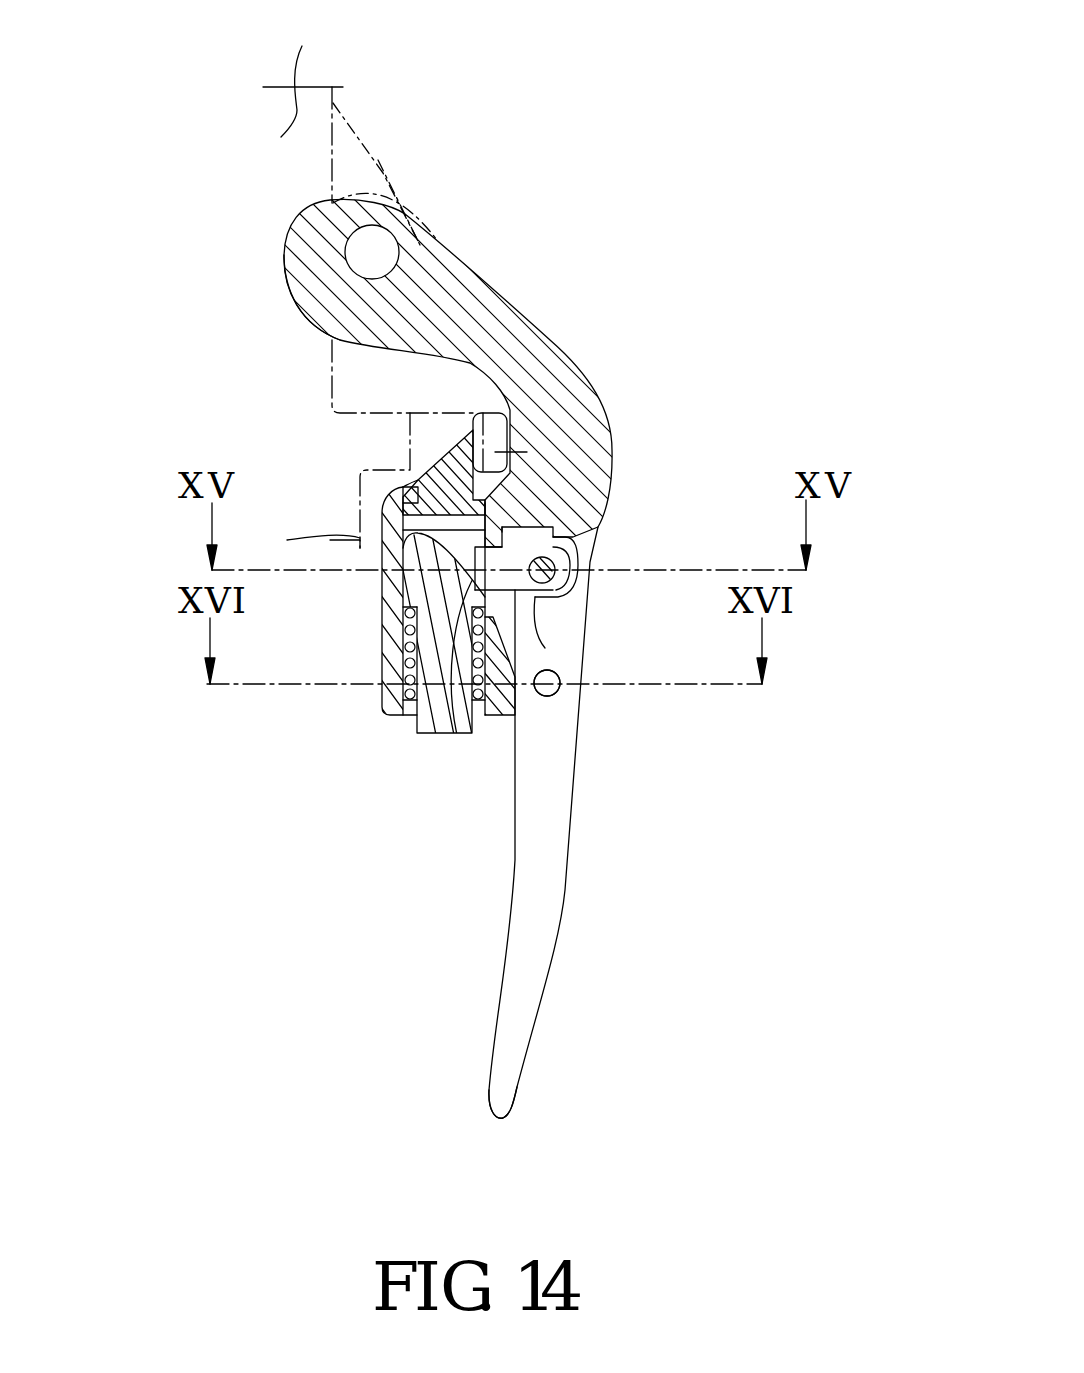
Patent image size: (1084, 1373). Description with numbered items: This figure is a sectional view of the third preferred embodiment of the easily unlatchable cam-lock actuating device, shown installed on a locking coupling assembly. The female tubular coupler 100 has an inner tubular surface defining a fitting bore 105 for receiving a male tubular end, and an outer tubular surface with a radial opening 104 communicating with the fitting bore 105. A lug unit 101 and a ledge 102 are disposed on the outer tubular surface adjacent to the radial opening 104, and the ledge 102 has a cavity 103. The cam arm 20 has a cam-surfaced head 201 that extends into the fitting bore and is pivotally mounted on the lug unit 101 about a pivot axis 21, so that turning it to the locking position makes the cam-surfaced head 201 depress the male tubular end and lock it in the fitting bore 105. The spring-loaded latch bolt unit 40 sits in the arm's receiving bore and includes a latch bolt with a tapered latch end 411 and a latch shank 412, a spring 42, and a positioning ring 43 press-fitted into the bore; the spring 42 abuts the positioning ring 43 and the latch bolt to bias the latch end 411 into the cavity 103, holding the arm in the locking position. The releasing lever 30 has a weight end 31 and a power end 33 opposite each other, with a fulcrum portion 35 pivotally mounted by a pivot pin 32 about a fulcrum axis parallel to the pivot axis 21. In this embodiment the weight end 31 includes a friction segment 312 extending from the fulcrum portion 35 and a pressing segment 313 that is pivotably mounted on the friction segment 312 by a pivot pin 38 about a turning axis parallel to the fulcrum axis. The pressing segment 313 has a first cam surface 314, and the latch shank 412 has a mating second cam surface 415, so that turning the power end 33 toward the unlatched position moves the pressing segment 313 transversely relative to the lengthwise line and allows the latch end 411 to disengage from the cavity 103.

The cam arm 20 is at (598, 333).
The pivot axis 21 is at (383, 253).
The cam-surfaced head 201 is at (298, 260).
The female tubular coupler 100 is at (350, 113).
The lug unit 101 is at (383, 163).
The radial opening 104 is at (417, 200).
The fitting bore 105 is at (303, 70).
The cavity 103 is at (610, 437).
The ledge 102 is at (527, 452).
The latch end 411 is at (445, 418).
The latch shank 412 is at (427, 727).
The second cam surface 415 is at (360, 538).
The spring-loaded latch bolt unit 40 is at (395, 730).
The spring 42 is at (403, 650).
The positioning ring 43 is at (403, 700).
The first cam surface 314 is at (430, 722).
The releasing lever 30 is at (585, 882).
The weight end 31 is at (620, 563).
The friction segment 312 is at (563, 633).
The pressing segment 313 is at (517, 553).
The pivot pin 32 is at (552, 693).
The fulcrum portion 35 is at (640, 703).
The pivot pin 38 is at (545, 648).
The power end 33 is at (504, 1104).